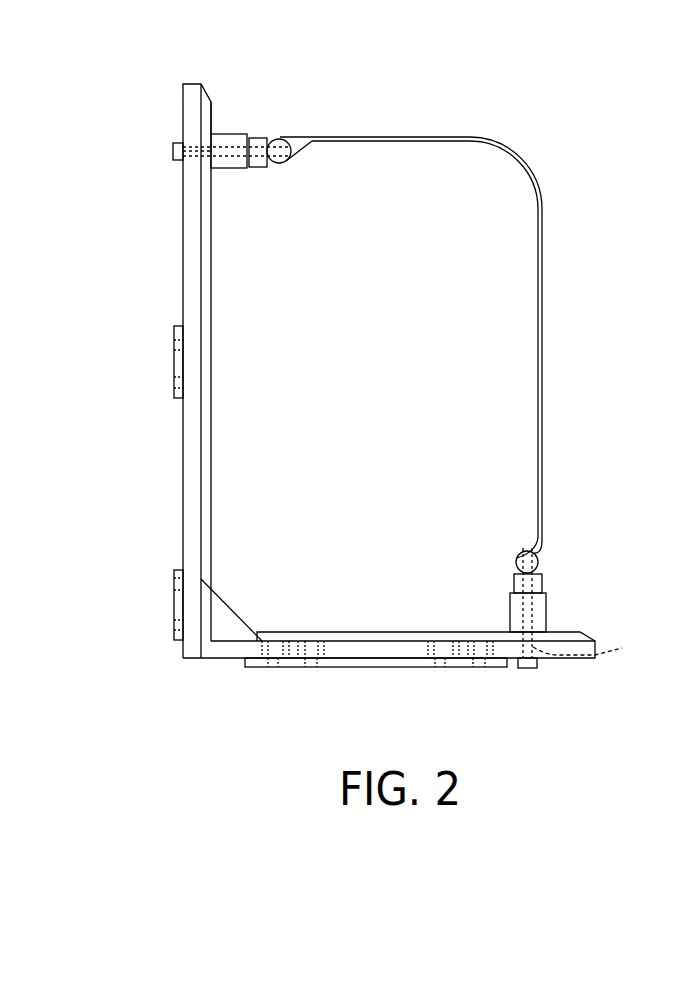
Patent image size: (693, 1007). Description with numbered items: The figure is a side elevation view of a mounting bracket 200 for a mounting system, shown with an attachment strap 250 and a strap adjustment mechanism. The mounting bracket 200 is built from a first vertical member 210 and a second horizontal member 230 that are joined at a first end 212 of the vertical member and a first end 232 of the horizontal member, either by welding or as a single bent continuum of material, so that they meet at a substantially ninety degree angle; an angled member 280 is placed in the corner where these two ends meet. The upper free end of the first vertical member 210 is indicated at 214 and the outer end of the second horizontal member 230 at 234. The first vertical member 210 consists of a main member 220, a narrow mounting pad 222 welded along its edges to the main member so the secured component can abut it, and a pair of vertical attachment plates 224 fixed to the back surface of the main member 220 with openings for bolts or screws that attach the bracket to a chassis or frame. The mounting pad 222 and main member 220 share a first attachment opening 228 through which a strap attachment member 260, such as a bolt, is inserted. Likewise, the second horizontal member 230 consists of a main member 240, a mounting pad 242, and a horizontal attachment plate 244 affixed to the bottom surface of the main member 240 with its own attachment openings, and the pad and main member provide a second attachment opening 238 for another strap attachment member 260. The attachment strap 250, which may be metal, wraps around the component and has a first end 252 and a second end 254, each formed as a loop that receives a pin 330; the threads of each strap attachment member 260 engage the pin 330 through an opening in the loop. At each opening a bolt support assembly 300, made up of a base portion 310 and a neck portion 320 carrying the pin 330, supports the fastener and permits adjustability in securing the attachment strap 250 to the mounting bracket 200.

The mounting bracket 200 is at (598, 155).
The first vertical member 210 is at (150, 428).
The first end of the first vertical member 212 is at (165, 658).
The upper end of support 214 is at (172, 92).
The main member 220 is at (200, 84).
The mounting pad 222 is at (213, 115).
The vertical attachment plates 224 is at (174, 360).
The first attachment opening 228 is at (182, 160).
The second horizontal member 230 is at (426, 633).
The first end of the second horizontal member 232 is at (213, 668).
The outer end of base 234 is at (585, 665).
The second attachment opening 238 is at (601, 643).
The main member 240 is at (410, 650).
The mounting pad 242 is at (300, 636).
The horizontal attachment plate 244 is at (330, 663).
The attachment strap 250 is at (443, 314).
The first end of the attachment strap 252 is at (330, 131).
The second end of the attachment strap 254 is at (552, 532).
The strap attachment member 260 is at (172, 150).
The angled member 280 is at (238, 612).
The bolt support assembly 300 is at (418, 349).
The anchor base 310 is at (225, 170).
The anchor neck 320 is at (258, 168).
The pin 330 is at (285, 162).